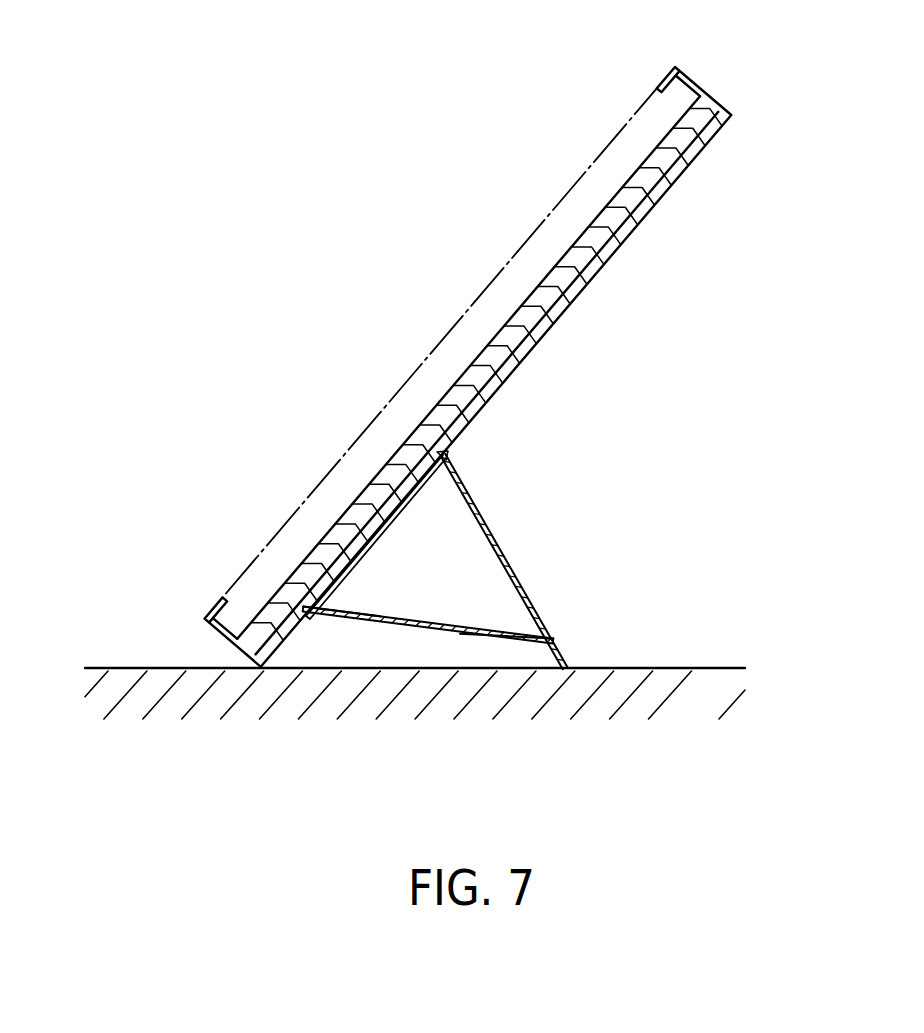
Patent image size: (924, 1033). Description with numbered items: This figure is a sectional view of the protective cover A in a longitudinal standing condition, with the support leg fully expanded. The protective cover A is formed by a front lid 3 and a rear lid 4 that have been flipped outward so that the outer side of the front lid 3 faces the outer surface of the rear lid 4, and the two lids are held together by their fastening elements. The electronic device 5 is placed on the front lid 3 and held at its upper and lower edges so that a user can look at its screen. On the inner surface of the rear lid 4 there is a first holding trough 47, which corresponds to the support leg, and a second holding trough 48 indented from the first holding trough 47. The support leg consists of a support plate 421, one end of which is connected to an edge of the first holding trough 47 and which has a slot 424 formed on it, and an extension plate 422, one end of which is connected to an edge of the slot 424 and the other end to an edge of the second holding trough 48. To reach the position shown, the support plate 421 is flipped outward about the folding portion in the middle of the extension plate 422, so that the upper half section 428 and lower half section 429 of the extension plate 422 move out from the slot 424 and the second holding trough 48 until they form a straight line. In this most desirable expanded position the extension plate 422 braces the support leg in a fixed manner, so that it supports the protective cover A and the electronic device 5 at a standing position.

The front lid 3 is at (703, 96).
The rear lid 4 is at (729, 118).
The electronic device 5 is at (475, 305).
The protective cover A is at (720, 195).
The first holding trough 47 is at (418, 494).
The second holding trough 48 is at (365, 540).
The support plate 421 is at (478, 502).
The slot 424 is at (522, 590).
The extension plate 422 is at (403, 632).
The upper half section 428 is at (468, 630).
The lower half section 429 is at (368, 620).